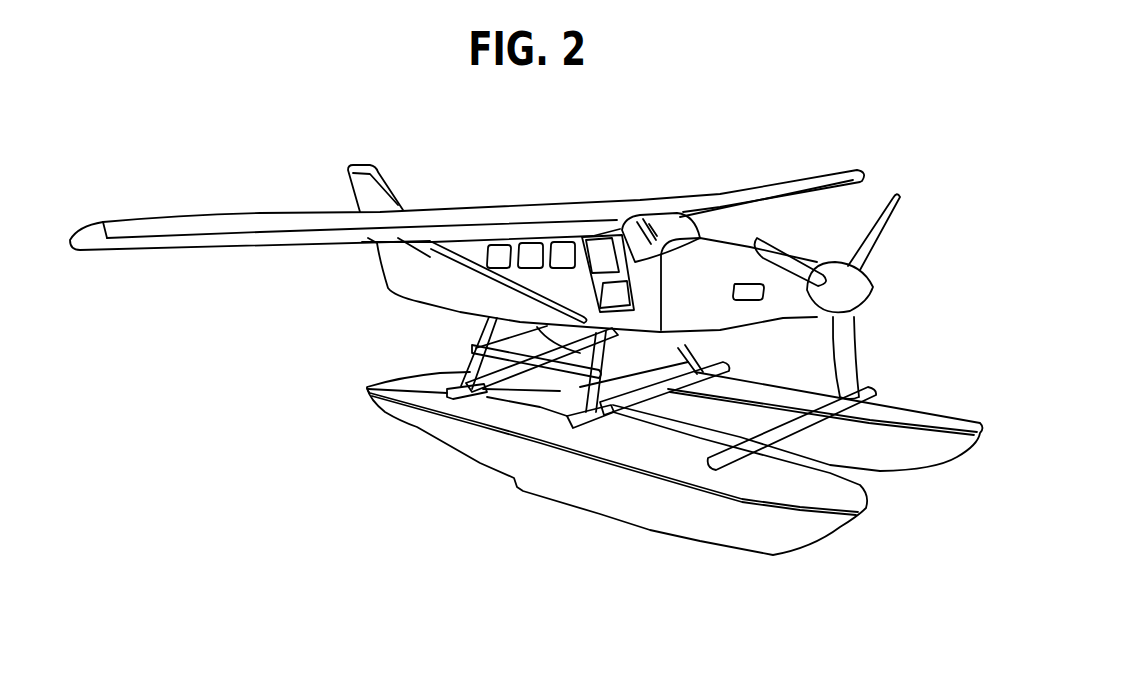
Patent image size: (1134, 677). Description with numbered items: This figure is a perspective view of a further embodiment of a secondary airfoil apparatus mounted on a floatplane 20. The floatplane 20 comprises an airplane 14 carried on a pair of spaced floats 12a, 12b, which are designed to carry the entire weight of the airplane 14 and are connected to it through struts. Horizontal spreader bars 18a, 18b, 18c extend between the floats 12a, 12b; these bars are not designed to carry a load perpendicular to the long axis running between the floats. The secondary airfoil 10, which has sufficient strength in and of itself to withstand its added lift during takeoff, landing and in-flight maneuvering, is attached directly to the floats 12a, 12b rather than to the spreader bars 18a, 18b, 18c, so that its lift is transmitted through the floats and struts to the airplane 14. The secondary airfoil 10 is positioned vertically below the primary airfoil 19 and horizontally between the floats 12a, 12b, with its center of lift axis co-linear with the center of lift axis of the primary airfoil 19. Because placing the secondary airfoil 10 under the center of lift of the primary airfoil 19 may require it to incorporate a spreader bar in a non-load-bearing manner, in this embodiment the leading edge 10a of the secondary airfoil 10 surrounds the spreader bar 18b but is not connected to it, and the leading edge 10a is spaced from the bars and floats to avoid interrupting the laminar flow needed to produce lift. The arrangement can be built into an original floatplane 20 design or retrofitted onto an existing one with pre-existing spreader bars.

The secondary airfoil 10 is at (563, 395).
The leading edge 10a is at (627, 413).
The float 12a is at (940, 420).
The float 12b is at (813, 530).
The airplane 14 is at (858, 287).
The spreader bar 18a is at (427, 390).
The spreader bar 18b is at (723, 370).
The spreader bar 18c is at (800, 427).
The primary airfoil 19 is at (730, 193).
The floatplane 20 is at (893, 200).